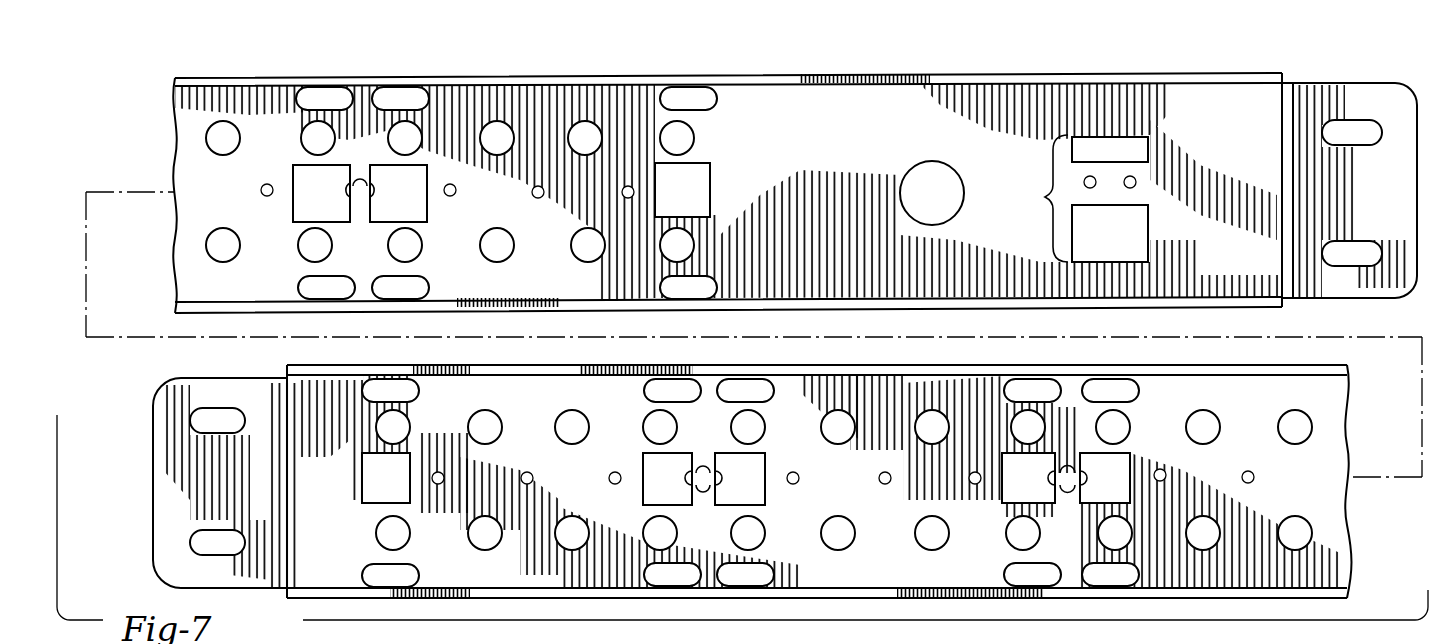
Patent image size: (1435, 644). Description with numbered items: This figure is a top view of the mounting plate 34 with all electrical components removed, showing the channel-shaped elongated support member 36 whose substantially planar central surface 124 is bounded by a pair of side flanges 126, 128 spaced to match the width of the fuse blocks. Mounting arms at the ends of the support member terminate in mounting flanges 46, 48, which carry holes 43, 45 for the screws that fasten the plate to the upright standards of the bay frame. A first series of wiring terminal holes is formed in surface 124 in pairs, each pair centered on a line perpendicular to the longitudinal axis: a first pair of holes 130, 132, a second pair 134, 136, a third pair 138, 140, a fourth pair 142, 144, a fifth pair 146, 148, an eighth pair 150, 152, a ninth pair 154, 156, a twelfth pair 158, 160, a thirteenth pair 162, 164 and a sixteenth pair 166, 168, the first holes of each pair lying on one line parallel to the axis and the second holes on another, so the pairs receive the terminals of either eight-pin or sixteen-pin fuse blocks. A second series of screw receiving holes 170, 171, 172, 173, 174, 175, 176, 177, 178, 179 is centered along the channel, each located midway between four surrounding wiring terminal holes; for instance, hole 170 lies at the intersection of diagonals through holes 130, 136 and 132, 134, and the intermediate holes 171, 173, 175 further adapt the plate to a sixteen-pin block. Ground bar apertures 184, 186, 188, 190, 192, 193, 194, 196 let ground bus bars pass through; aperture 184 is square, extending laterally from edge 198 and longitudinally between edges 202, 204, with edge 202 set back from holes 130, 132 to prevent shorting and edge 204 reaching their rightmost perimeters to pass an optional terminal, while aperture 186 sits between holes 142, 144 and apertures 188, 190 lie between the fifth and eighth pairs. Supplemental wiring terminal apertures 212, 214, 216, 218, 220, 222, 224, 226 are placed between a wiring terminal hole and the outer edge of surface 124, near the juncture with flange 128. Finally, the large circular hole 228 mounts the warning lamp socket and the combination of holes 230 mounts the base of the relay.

The mounting plate 34 is at (126, 408).
The channel-shaped elongated support member 36 is at (1357, 412).
The holes 43 is at (1352, 180).
The holes 45 is at (210, 463).
The mounting flange 46 is at (1392, 90).
The mounting flange 48 is at (161, 504).
The substantially planar central surface 124 is at (808, 137).
The side flange 126 is at (798, 368).
The side flange 128 is at (680, 592).
The wiring terminal hole 130 is at (408, 539).
The wiring terminal hole 132 is at (405, 420).
The wiring terminal hole 134 is at (480, 545).
The wiring terminal hole 136 is at (492, 417).
The wiring terminal hole 138 is at (569, 546).
The wiring terminal hole 140 is at (580, 417).
The wiring terminal hole 142 is at (674, 526).
The wiring terminal hole 144 is at (675, 422).
The wiring terminal hole 146 is at (761, 526).
The wiring terminal hole 148 is at (762, 424).
The wiring terminal hole 150 is at (1010, 536).
The wiring terminal hole 152 is at (1016, 424).
The wiring terminal hole 154 is at (1128, 540).
The wiring terminal hole 156 is at (1123, 419).
The wiring terminal hole 158 is at (300, 248).
The wiring terminal hole 160 is at (303, 140).
The wiring terminal hole 162 is at (420, 250).
The wiring terminal hole 164 is at (421, 141).
The wiring terminal hole 166 is at (692, 240).
The wiring terminal hole 168 is at (692, 136).
The screw receiving hole 170 is at (439, 486).
The screw receiving hole 171 is at (529, 474).
The screw receiving hole 172 is at (611, 474).
The screw receiving hole 173 is at (703, 462).
The screw receiving hole 174 is at (799, 475).
The screw receiving hole 175 is at (879, 480).
The screw receiving hole 176 is at (969, 478).
The screw receiving hole 177 is at (1068, 460).
The screw receiving hole 178 is at (532, 193).
The screw receiving hole 179 is at (622, 193).
The ground bar aperture 184 is at (352, 488).
The ground bar aperture 186 is at (647, 496).
The ground bar aperture 188 is at (763, 496).
The ground bar aperture 190 is at (1003, 498).
The ground bar aperture 192 is at (1128, 457).
The ground bar aperture 193 is at (296, 211).
The ground bar aperture 194 is at (425, 210).
The ground bar aperture 196 is at (711, 176).
The edge 198 is at (376, 501).
The edge 202 is at (364, 468).
The edge 204 is at (408, 467).
The supplemental wiring terminal aperture 212 is at (372, 583).
The supplemental wiring terminal aperture 214 is at (373, 392).
The supplemental wiring terminal aperture 216 is at (654, 580).
The supplemental wiring terminal aperture 218 is at (654, 384).
The supplemental wiring terminal aperture 220 is at (758, 580).
The supplemental wiring terminal aperture 222 is at (723, 384).
The supplemental wiring terminal aperture 224 is at (1012, 573).
The supplemental wiring terminal aperture 226 is at (1013, 385).
The large circular hole 228 is at (948, 173).
The combination of holes 230 is at (1040, 205).